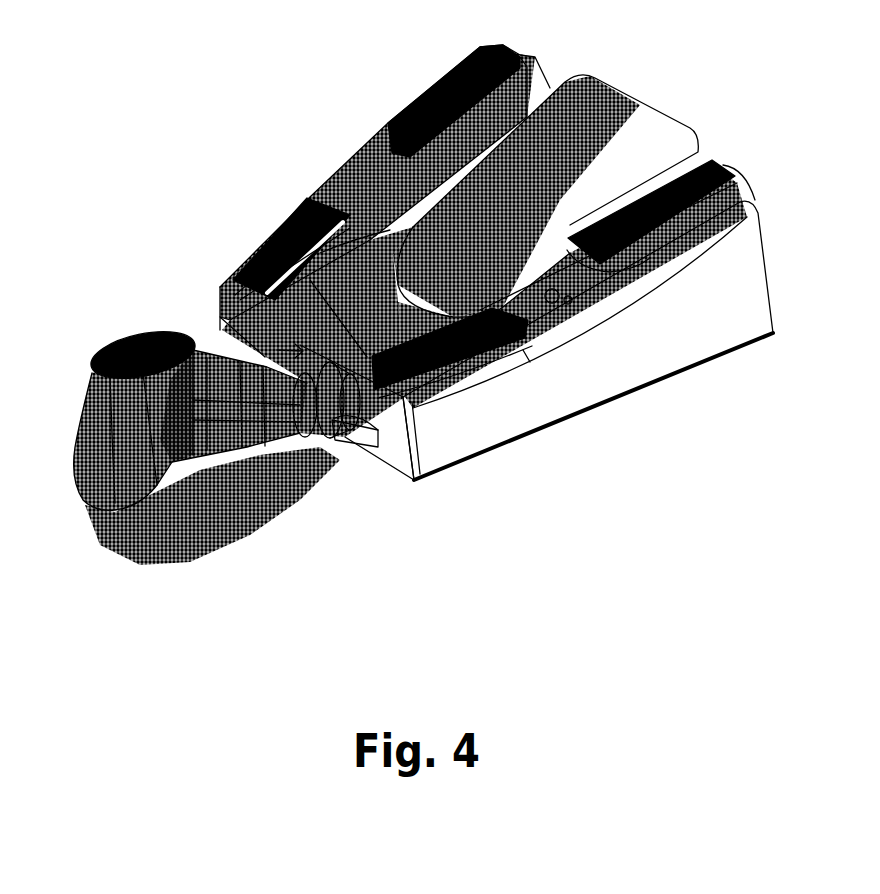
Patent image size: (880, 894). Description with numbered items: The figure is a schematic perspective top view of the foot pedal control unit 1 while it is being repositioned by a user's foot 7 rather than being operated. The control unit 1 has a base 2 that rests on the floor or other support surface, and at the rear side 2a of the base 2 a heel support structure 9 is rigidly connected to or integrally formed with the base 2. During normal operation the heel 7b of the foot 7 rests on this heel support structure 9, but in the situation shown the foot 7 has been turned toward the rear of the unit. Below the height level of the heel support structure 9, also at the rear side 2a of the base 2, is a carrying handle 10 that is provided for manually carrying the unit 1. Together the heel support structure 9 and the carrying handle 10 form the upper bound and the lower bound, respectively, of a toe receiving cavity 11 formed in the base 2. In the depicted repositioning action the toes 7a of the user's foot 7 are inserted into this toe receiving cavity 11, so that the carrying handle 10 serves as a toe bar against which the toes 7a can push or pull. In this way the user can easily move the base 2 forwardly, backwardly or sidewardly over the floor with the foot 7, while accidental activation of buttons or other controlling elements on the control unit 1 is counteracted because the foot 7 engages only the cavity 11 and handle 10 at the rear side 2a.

The foot pedal control unit 1 is at (260, 92).
The base 2 is at (550, 383).
The rear side 2a is at (395, 443).
The user's foot 7 is at (240, 425).
The toes 7a is at (358, 443).
The heel 7b is at (97, 490).
The heel support structure 9 is at (325, 262).
The carrying handle 10 is at (383, 455).
The toe receiving cavity 11 is at (250, 340).